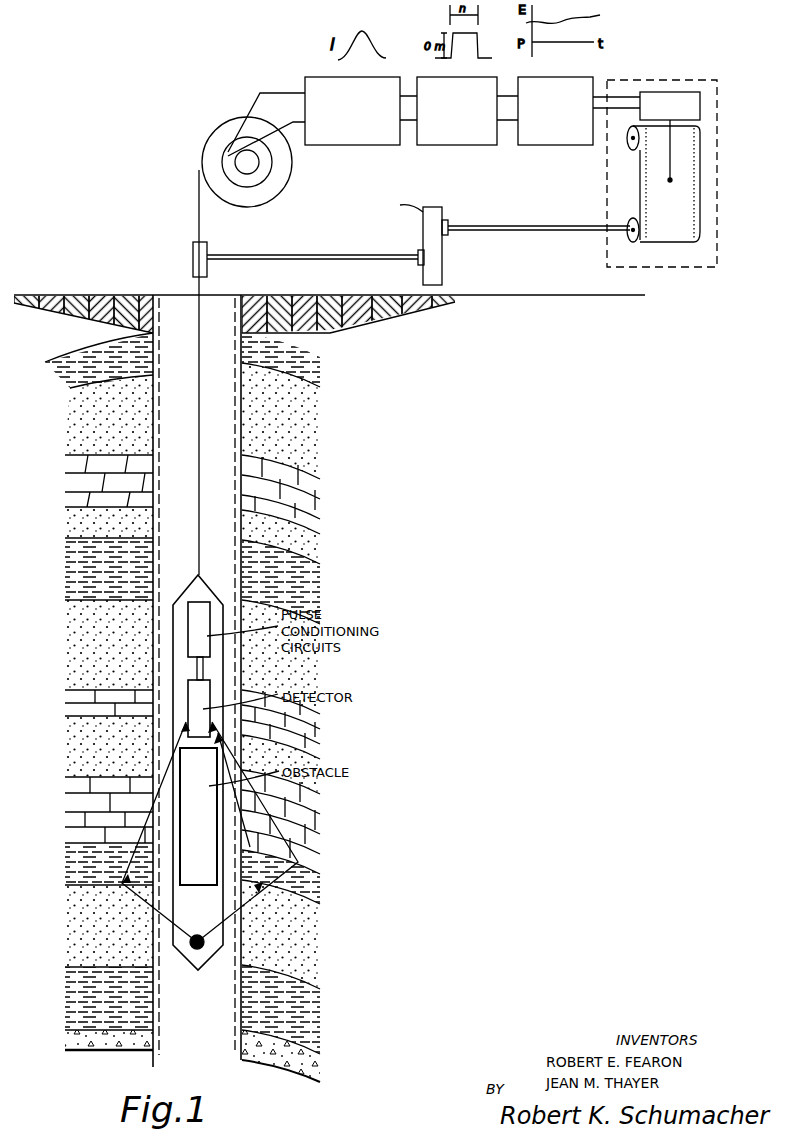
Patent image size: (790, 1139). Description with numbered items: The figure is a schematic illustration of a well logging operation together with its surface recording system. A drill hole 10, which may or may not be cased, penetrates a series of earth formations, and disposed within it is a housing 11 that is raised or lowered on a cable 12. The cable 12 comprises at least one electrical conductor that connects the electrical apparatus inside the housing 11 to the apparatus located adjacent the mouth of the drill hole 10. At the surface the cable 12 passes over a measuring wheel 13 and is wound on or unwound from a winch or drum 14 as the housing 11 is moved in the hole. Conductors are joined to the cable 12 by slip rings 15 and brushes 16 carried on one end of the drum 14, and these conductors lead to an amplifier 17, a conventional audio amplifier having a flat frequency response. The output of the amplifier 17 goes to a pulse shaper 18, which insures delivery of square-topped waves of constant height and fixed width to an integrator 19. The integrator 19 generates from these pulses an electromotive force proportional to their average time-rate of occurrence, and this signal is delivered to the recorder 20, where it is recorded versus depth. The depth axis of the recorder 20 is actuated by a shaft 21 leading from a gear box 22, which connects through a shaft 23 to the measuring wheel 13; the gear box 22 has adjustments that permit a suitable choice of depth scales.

The drill hole 10 is at (238, 592).
The housing 11 is at (170, 604).
The cable 12 is at (200, 437).
The measuring wheel 13 is at (193, 245).
The drum 14 is at (264, 207).
The slip rings 15 is at (261, 163).
The brushes 16 is at (232, 152).
The amplifier 17 is at (390, 147).
The pulse shaper 18 is at (485, 147).
The integrator 19 is at (580, 147).
The recorder 20 is at (712, 175).
The shaft 21 is at (576, 230).
The gear box 22 is at (432, 262).
The shaft 23 is at (295, 255).